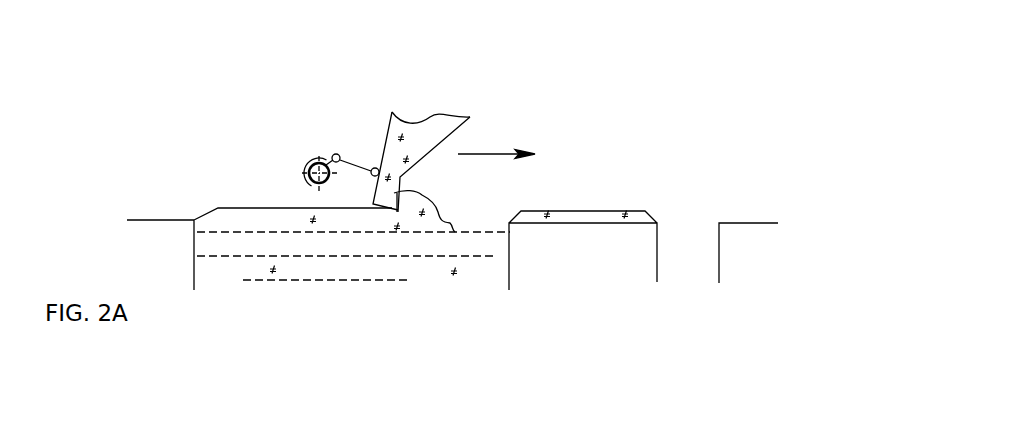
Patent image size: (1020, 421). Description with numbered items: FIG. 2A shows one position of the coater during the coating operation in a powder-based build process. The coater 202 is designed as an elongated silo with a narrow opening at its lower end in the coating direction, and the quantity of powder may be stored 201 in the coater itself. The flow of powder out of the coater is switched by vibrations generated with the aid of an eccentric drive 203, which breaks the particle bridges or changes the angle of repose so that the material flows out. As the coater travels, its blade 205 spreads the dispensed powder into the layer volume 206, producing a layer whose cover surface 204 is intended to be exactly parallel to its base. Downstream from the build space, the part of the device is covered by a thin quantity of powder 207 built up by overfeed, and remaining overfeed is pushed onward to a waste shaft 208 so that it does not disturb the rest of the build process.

The powder storage 201 is at (450, 118).
The coater 202 is at (387, 111).
The eccentric drive 203 is at (310, 156).
The cover surface 204 is at (224, 210).
The blade 205 is at (388, 222).
The layer volume 206 is at (488, 235).
The thin quantity of powder 207 is at (597, 227).
The waste shaft 208 is at (694, 223).